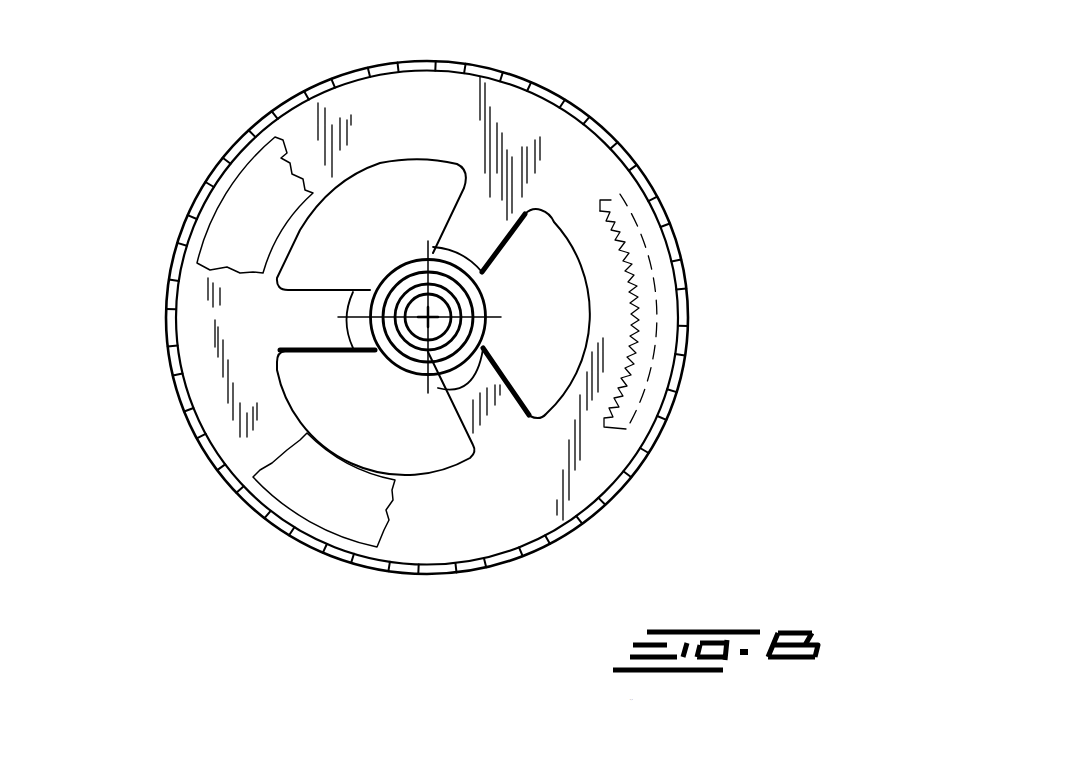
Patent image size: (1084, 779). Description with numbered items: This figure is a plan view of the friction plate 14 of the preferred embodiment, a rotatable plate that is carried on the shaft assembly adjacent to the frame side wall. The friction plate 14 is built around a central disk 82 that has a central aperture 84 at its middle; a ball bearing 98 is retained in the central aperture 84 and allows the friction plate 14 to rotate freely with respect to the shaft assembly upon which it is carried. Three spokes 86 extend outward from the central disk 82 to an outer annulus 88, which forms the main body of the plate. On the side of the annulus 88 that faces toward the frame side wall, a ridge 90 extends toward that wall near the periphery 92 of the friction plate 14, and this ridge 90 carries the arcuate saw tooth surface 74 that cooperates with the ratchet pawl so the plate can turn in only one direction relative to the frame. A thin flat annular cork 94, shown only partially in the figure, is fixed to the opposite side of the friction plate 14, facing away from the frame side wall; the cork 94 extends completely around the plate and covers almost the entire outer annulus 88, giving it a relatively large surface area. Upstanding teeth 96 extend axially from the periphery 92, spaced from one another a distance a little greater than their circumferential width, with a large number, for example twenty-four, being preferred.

The friction plate 14 is at (612, 130).
The arcuate saw tooth surface 74 is at (635, 210).
The central disk 82 is at (487, 302).
The central aperture 84 is at (403, 287).
The spokes 86 is at (458, 208).
The outer annulus 88 is at (510, 521).
The ridge 90 is at (668, 262).
The periphery 92 is at (688, 307).
The annular cork 94 is at (275, 214).
The teeth 96 is at (390, 60).
The ball bearing 98 is at (417, 356).